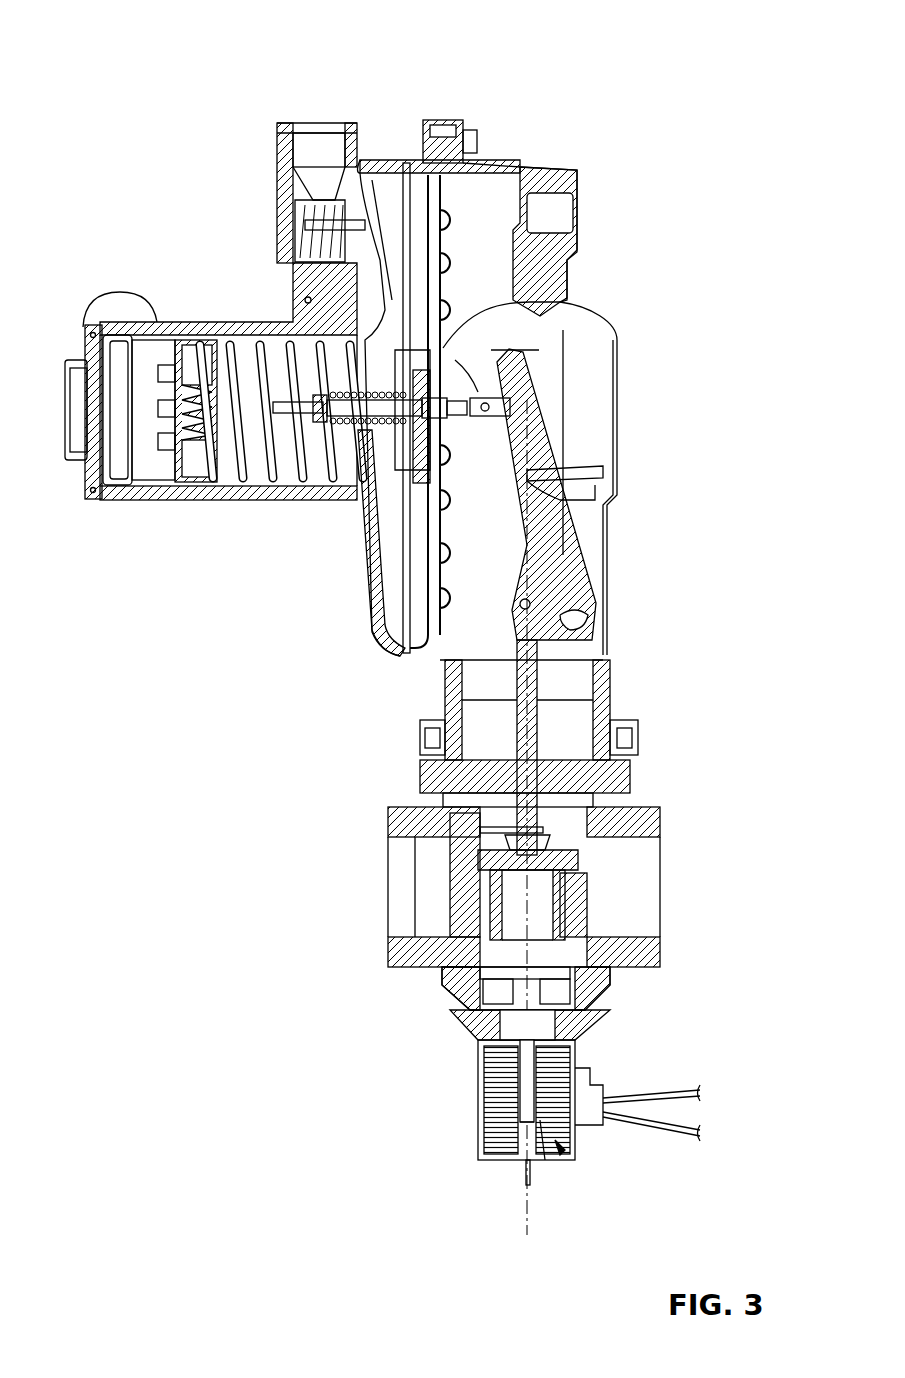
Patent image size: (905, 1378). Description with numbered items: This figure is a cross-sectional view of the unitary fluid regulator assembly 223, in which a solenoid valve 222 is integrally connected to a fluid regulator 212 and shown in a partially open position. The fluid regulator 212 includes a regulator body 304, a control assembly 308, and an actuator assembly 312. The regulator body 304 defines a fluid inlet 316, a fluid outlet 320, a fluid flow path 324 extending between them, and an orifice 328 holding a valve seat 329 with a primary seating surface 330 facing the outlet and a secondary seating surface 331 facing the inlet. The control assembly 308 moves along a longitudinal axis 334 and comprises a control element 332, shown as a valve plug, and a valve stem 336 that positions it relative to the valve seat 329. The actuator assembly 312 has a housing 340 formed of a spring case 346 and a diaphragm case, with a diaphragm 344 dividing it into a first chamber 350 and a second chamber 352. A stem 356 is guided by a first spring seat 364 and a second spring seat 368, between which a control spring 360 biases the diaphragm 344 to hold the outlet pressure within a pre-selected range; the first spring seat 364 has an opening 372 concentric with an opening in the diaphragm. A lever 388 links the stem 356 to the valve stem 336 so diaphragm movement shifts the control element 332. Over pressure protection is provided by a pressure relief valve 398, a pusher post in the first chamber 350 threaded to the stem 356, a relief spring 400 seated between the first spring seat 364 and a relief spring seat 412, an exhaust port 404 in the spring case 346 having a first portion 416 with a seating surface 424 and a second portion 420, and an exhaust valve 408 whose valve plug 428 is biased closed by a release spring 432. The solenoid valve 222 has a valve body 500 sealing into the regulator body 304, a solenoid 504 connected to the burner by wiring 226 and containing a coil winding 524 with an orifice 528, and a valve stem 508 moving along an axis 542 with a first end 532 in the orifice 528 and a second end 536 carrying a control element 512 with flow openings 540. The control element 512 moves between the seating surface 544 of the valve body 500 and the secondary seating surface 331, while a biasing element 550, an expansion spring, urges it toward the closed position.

The fluid regulator 212 is at (628, 444).
The solenoid valve 222 is at (463, 1118).
The unitary fluid regulator assembly 223 is at (203, 148).
The wiring 226 is at (666, 1140).
The regulator body 304 is at (658, 790).
The control assembly 308 is at (546, 705).
The actuator assembly 312 is at (246, 308).
The fluid inlet 316 is at (386, 866).
The fluid outlet 320 is at (660, 866).
The fluid flow path 324 is at (453, 933).
The orifice 328 is at (583, 898).
The valve seat 329 is at (586, 900).
The primary seating surface 330 is at (570, 883).
The secondary seating surface 331 is at (585, 970).
The control element 332 is at (578, 860).
The longitudinal axis 334 is at (523, 1178).
The valve stem 336 is at (516, 763).
The housing 340 is at (503, 180).
The diaphragm 344 is at (428, 163).
The spring case 346 is at (157, 320).
The first chamber 350 is at (517, 336).
The second chamber 352 is at (395, 256).
The stem 356 is at (260, 486).
The control spring 360 is at (278, 410).
The first spring seat 364 is at (381, 518).
The second spring seat 368 is at (170, 484).
The opening 372 is at (565, 300).
The lever 388 is at (568, 568).
The pressure relief valve 398 is at (463, 366).
The relief spring 400 is at (365, 425).
The exhaust port 404 is at (301, 120).
The exhaust valve 408 is at (314, 181).
The relief spring seat 412 is at (345, 428).
The first portion 416 is at (330, 150).
The second portion 420 is at (308, 254).
The seating surface 424 is at (361, 158).
The valve plug 428 is at (308, 231).
The release spring 432 is at (296, 224).
The valve body 500 is at (503, 1028).
The solenoid 504 is at (480, 1160).
The valve stem 508 is at (548, 1054).
The control element 512 is at (478, 968).
The coil winding 524 is at (526, 1141).
The orifice 528 is at (526, 1166).
The first end 532 is at (543, 1160).
The second end 536 is at (503, 1000).
The flow openings 540 is at (496, 978).
The axis 542 is at (525, 1176).
The seating surface 544 is at (563, 1013).
The biasing element 550 is at (478, 1028).